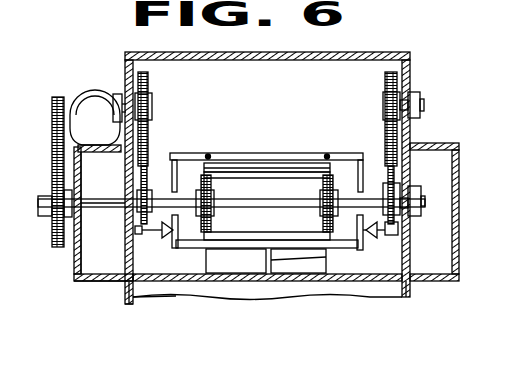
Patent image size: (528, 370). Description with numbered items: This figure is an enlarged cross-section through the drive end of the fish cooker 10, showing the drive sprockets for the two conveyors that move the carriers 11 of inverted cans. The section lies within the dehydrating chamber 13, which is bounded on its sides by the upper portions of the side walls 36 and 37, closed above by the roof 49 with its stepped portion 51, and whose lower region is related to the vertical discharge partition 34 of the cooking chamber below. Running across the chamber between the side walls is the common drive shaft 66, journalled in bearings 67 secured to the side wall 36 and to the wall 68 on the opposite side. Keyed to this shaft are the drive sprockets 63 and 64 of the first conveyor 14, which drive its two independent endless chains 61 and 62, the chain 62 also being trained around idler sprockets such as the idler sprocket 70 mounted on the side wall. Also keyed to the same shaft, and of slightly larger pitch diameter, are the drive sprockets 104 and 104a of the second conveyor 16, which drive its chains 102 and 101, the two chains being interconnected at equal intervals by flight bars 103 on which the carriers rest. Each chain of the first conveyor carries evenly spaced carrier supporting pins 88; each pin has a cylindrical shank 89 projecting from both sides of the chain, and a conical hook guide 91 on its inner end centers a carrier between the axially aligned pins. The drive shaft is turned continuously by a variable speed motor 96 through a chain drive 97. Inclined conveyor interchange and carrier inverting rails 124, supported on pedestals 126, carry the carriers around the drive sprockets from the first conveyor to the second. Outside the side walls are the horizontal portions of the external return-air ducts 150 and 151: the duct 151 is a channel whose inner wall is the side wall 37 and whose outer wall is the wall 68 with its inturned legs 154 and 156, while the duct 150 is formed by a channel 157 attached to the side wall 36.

The fish cooker 10 is at (133, 304).
The carriers 11 is at (178, 159).
The dehydrating chamber 13 is at (190, 262).
The first conveyor 14 is at (150, 74).
The second conveyor 16 is at (287, 163).
The vertical discharge partition 34 is at (157, 297).
The side wall 36 is at (410, 297).
The side wall 37 is at (124, 297).
The roof 49 is at (140, 57).
The stepped portion 51 is at (278, 83).
The endless chain 61 is at (388, 146).
The endless chain 62 is at (136, 168).
The drive sprocket 63 is at (401, 185).
The drive sprocket 64 is at (138, 218).
The drive shaft 66 is at (95, 208).
The bearings 67 is at (56, 228).
The wall 68 is at (74, 256).
The idler sprocket 70 is at (152, 110).
The carrier supporting pins 88 is at (140, 233).
The cylindrical shank 89 is at (170, 234).
The conical hook guides 91 is at (382, 238).
The variable speed motor 96 is at (95, 90).
The chain drive 97 is at (52, 128).
The chain 101 is at (324, 176).
The chain 102 is at (204, 232).
The flight bars 103 is at (236, 168).
The drive sprocket 104 is at (207, 180).
The drive sprocket 104a is at (327, 208).
The conveyor interchange and carrier inverting rails 124 is at (207, 155).
The pedestals 126 is at (269, 262).
The external duct 150 is at (459, 235).
The external duct 151 is at (77, 273).
The inturned leg 154 is at (96, 152).
The inturned leg 156 is at (87, 284).
The channel 157 is at (459, 210).